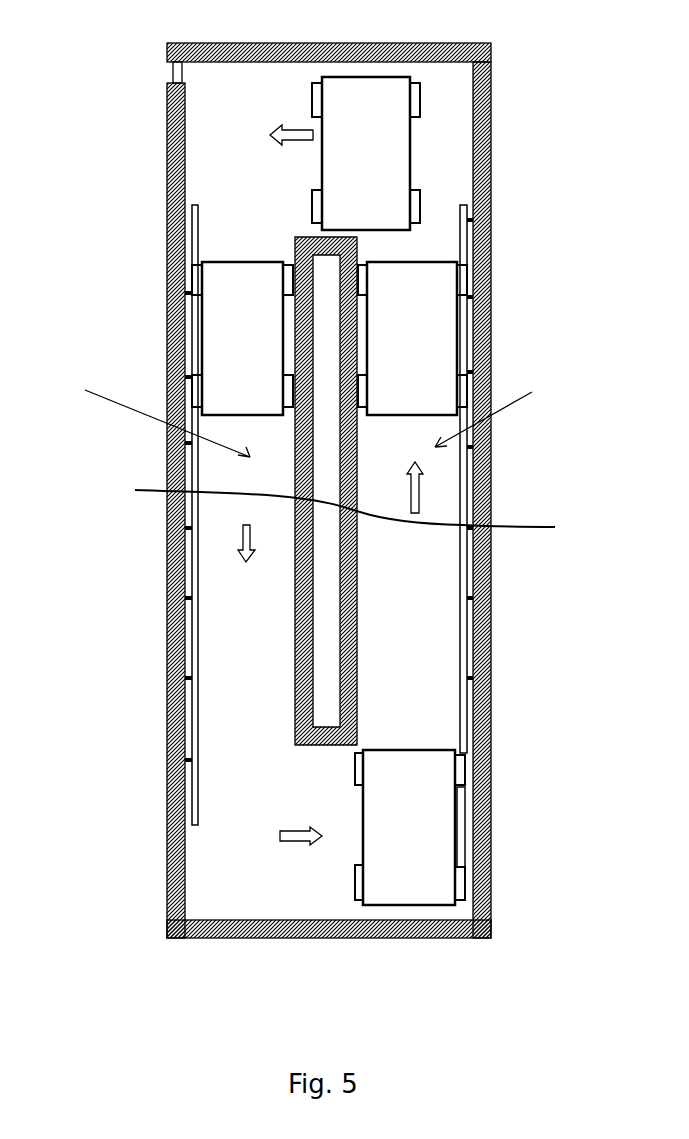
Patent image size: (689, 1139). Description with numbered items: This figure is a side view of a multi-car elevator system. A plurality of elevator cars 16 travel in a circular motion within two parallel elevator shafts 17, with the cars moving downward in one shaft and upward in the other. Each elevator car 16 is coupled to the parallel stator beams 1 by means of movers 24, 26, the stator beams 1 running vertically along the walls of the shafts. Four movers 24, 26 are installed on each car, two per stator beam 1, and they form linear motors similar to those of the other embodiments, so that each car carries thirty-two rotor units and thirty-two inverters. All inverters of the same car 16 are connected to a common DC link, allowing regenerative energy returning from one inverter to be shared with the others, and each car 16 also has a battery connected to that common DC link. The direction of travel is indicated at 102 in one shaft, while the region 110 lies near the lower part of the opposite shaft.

The stator beam 1 is at (193, 577).
The elevator car 16 is at (370, 127).
The mover 24 is at (312, 203).
The mover 26 is at (317, 100).
The downward flow direction 102 is at (141, 417).
The elevator shaft 17 is at (500, 414).
The return channel 110 is at (523, 536).